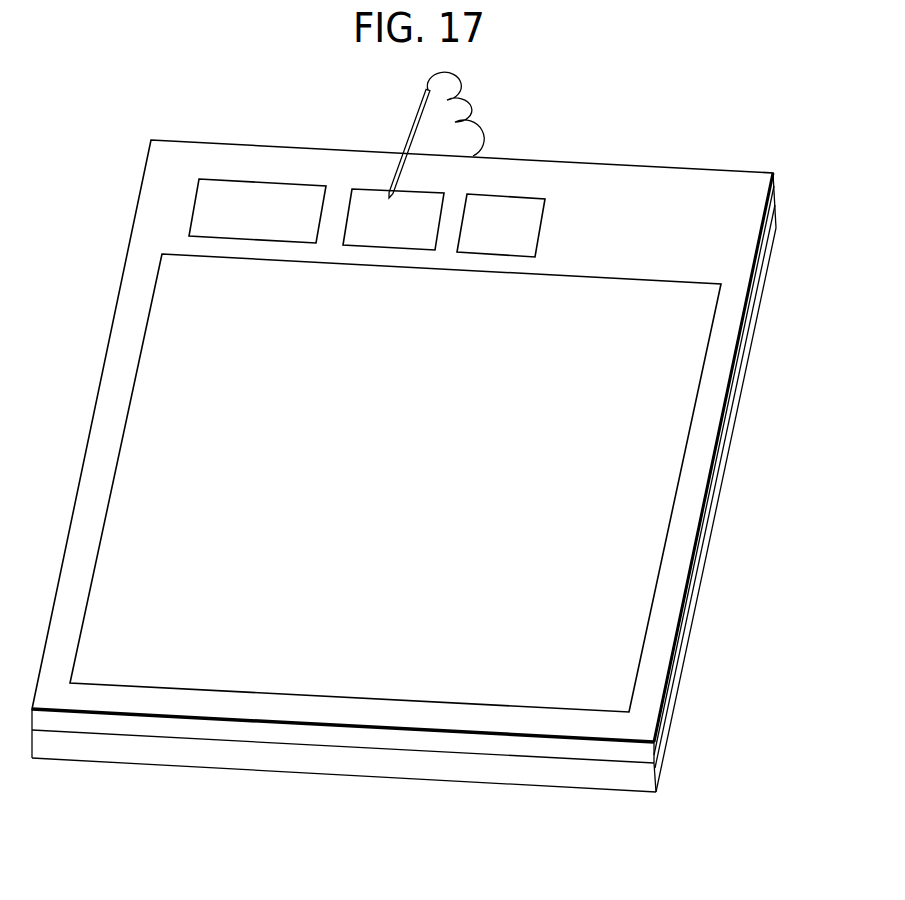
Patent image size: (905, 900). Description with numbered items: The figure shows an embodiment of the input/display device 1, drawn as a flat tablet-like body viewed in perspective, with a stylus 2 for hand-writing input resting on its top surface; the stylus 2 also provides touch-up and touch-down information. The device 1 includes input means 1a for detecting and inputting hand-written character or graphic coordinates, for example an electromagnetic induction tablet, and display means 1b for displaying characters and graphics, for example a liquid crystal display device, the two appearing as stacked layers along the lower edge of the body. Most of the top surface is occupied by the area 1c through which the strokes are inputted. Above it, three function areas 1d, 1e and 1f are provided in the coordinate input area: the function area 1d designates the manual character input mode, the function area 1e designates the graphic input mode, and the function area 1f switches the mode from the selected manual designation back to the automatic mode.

The input/display device 1 is at (75, 498).
The input means 1a is at (418, 760).
The display means 1b is at (267, 728).
The stroke input area 1c is at (135, 380).
The function area 1d is at (193, 214).
The function area 1e is at (363, 187).
The function area 1f is at (500, 197).
The stylus 2 is at (410, 116).